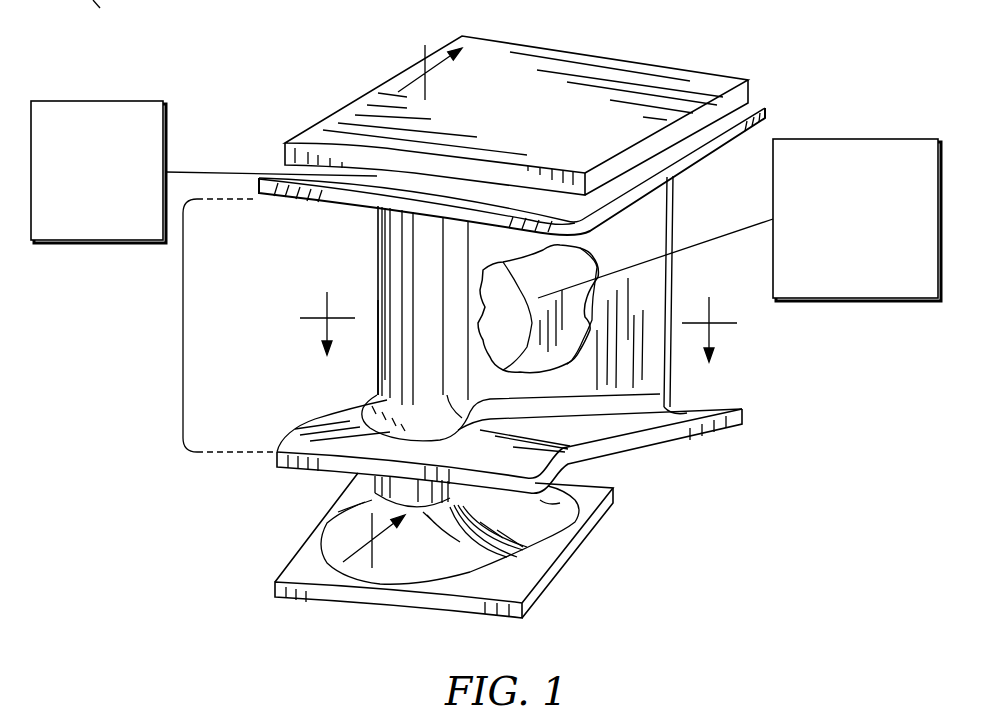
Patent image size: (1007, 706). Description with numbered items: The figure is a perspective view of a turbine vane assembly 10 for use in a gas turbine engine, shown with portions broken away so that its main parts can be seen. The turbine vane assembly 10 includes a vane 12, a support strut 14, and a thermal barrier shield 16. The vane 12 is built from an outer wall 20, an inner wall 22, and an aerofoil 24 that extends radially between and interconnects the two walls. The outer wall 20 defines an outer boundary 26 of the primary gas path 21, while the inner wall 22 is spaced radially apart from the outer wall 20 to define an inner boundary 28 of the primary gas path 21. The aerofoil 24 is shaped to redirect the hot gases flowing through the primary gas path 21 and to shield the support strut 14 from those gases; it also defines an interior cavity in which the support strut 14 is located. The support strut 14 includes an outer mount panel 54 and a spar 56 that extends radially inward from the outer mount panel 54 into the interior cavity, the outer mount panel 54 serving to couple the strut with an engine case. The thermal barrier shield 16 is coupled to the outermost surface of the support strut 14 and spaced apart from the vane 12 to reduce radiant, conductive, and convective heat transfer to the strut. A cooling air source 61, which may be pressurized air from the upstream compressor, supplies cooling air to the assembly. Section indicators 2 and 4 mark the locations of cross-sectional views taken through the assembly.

The turbine vane assembly 10 is at (100, 705).
The vane 12 is at (343, 240).
The support strut 14 is at (318, 490).
The thermal barrier shield 16 is at (893, 139).
The outer wall 20 is at (782, 112).
The primary gas path 21 is at (184, 325).
The inner wall 22 is at (762, 413).
The aerofoil 24 is at (358, 370).
The outer boundary 26 is at (228, 195).
The inner boundary 28 is at (214, 450).
The outer mount panel 54 is at (343, 99).
The spar 56 is at (500, 300).
The cooling air source 61 is at (120, 101).
The section line 2 is at (518, 315).
The section line 4 is at (410, 304).